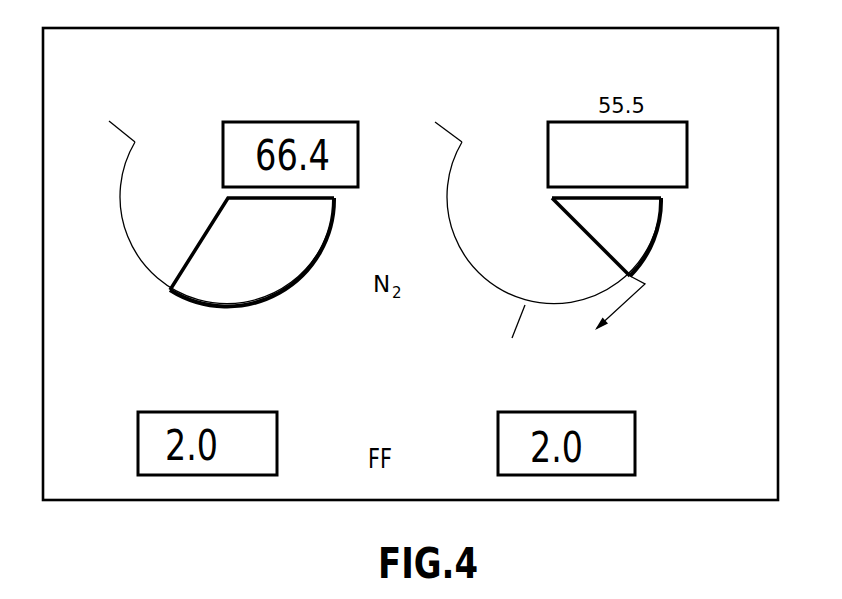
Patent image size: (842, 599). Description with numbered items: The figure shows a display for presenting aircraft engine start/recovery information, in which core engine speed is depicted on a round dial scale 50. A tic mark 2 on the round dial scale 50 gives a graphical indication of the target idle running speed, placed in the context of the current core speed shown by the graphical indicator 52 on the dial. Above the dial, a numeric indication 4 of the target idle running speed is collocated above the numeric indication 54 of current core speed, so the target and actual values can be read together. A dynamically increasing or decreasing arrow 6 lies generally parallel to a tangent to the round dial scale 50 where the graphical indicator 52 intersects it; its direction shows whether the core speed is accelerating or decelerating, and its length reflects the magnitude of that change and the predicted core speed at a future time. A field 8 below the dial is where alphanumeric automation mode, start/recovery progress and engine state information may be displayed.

The tic mark 2 is at (500, 321).
The numeric indication 4 is at (665, 68).
The arrow 6 is at (630, 297).
The field 8 is at (632, 360).
The round dial scale 50 is at (658, 240).
The graphical indicator 52 is at (593, 238).
The numeric indication of current core speed 54 is at (687, 155).